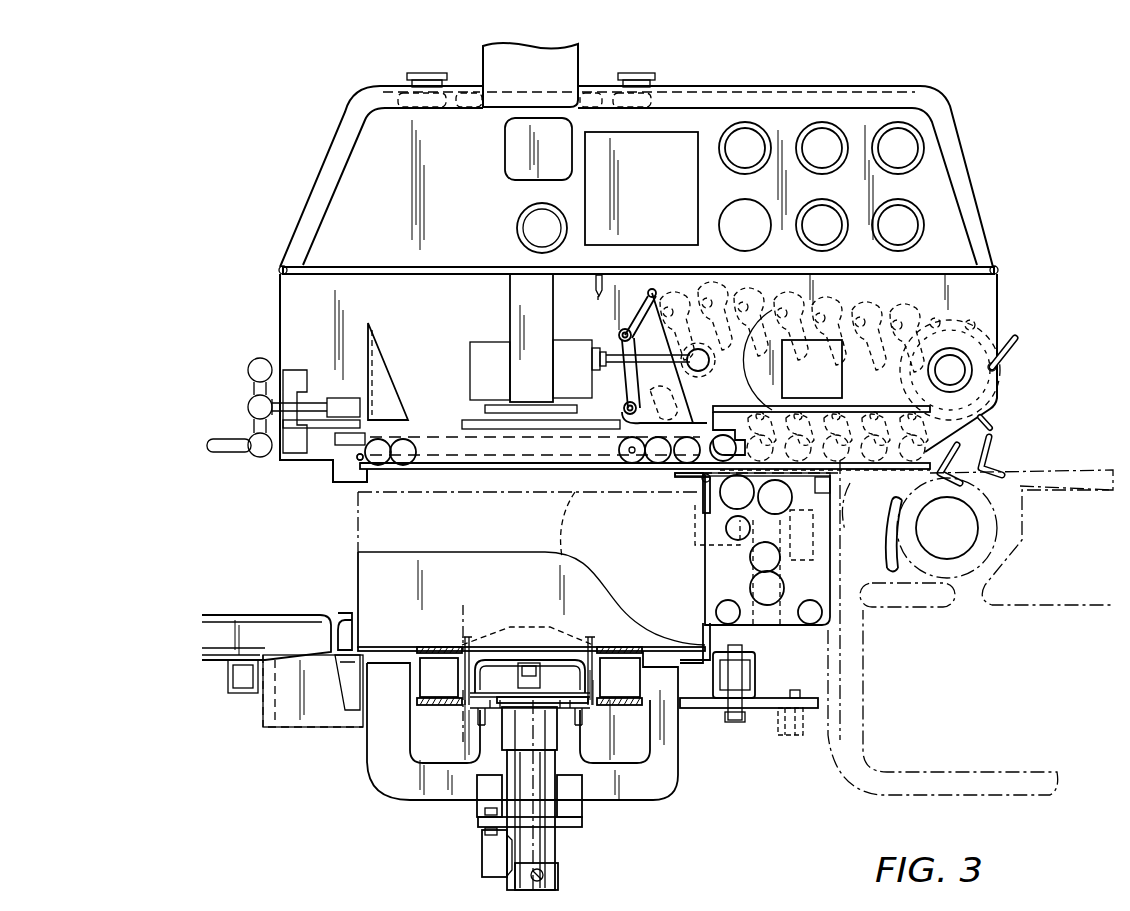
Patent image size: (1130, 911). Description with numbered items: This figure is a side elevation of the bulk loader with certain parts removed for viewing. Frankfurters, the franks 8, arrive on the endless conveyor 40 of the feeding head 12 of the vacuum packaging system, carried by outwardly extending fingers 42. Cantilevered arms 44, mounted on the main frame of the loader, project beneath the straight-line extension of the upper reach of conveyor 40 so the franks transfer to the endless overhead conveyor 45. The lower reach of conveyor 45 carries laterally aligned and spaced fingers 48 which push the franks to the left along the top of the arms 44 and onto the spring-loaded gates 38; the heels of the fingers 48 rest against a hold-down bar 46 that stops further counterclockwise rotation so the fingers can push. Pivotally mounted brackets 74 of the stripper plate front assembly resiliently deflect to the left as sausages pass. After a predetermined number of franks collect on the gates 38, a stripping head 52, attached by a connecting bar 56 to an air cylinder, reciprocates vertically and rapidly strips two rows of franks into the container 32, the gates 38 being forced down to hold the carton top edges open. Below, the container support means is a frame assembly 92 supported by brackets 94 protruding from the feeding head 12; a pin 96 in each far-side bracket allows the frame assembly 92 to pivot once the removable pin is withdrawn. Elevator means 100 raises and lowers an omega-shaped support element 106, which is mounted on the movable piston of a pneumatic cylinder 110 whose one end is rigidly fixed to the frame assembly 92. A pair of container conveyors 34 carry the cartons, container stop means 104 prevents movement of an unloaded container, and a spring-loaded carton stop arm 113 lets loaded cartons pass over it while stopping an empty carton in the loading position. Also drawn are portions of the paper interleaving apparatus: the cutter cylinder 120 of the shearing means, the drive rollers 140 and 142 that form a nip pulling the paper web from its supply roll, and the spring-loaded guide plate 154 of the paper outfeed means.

The franks 8 is at (358, 459).
The feeding head 12 is at (442, 625).
The container 32 is at (358, 553).
The container conveyors 34 is at (703, 642).
The gates 38 is at (405, 471).
The endless conveyor 40 is at (1026, 462).
The fingers 42 is at (997, 447).
The cantilevered arms 44 is at (846, 476).
The overhead conveyor 45 is at (1024, 331).
The hold-down bar 46 is at (846, 399).
The fingers 48 is at (1010, 350).
The stripping head 52 is at (403, 363).
The connecting bar 56 is at (510, 312).
The brackets 74 is at (660, 297).
The frame assembly 92 is at (706, 520).
The brackets 94 is at (778, 728).
The pin 96 is at (795, 690).
The elevator means 100 is at (614, 812).
The container stop means 104 is at (593, 622).
The support element 106 is at (403, 790).
The pneumatic cylinder 110 is at (557, 845).
The carton stop arm 113 is at (550, 628).
The cutter cylinder 120 is at (722, 510).
The drive roller 140 is at (762, 556).
The drive roller 142 is at (762, 588).
The guide plate 154 is at (657, 478).